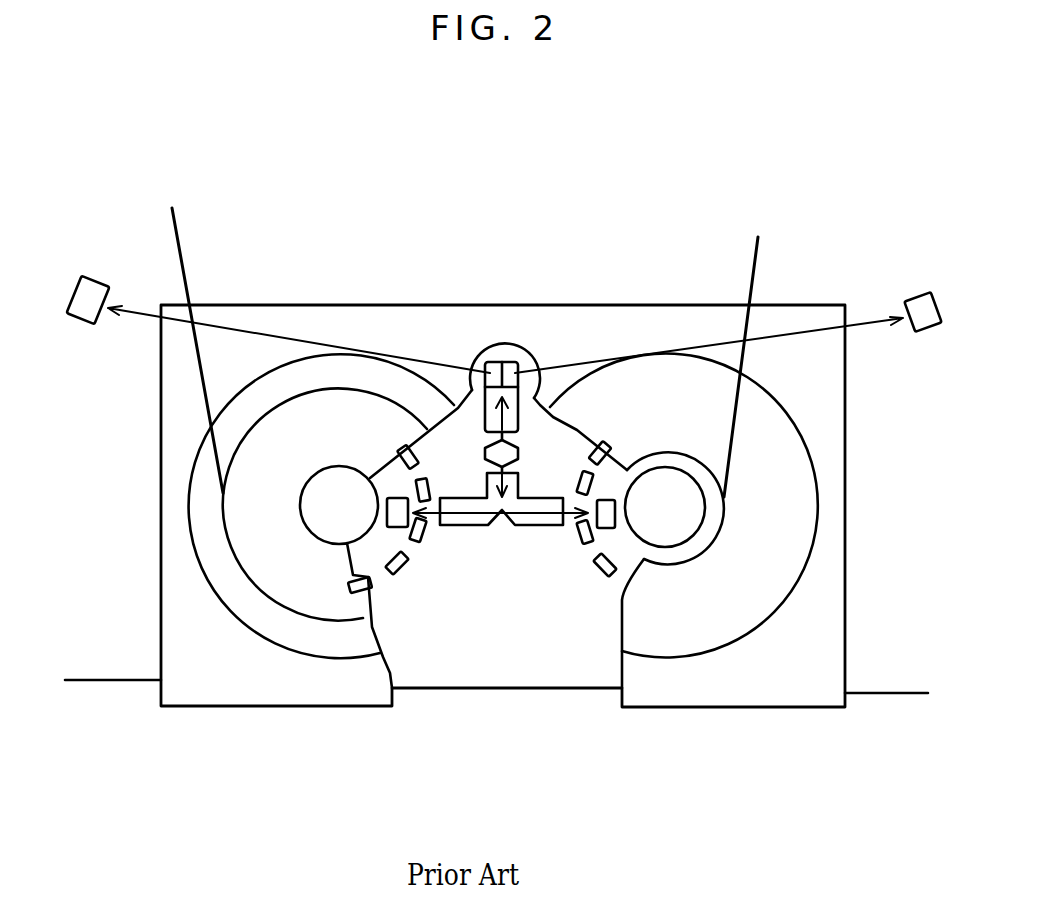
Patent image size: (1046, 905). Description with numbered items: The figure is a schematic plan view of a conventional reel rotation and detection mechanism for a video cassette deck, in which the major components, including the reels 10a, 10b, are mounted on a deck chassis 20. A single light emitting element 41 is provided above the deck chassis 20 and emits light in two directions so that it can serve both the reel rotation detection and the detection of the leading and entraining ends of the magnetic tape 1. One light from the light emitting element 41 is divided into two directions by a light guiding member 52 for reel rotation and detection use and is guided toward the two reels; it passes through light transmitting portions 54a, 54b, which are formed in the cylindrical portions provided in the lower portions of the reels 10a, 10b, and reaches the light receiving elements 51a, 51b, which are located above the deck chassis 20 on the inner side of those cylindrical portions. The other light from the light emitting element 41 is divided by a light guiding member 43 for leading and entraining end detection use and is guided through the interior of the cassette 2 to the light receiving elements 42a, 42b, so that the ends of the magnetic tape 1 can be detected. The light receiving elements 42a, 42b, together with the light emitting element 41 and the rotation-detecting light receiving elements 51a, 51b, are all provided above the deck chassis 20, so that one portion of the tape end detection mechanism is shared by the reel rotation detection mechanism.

The magnetic tape 1 is at (182, 243).
The cassette 2 is at (477, 305).
The deck chassis 20 is at (880, 693).
The reel 10a is at (317, 540).
The reel 10b is at (690, 547).
The light emitting element 41 is at (520, 453).
The light guiding member for leading and entraining end detection use 43 is at (536, 360).
The light receiving element 42a is at (95, 276).
The light receiving element 42b is at (917, 293).
The light receiving element 51a is at (393, 498).
The light receiving element 51b is at (607, 498).
The light guiding member for reel rotation and detection use 52 is at (476, 525).
The light transmitting portion 54a is at (412, 550).
The light transmitting portion 54b is at (590, 553).